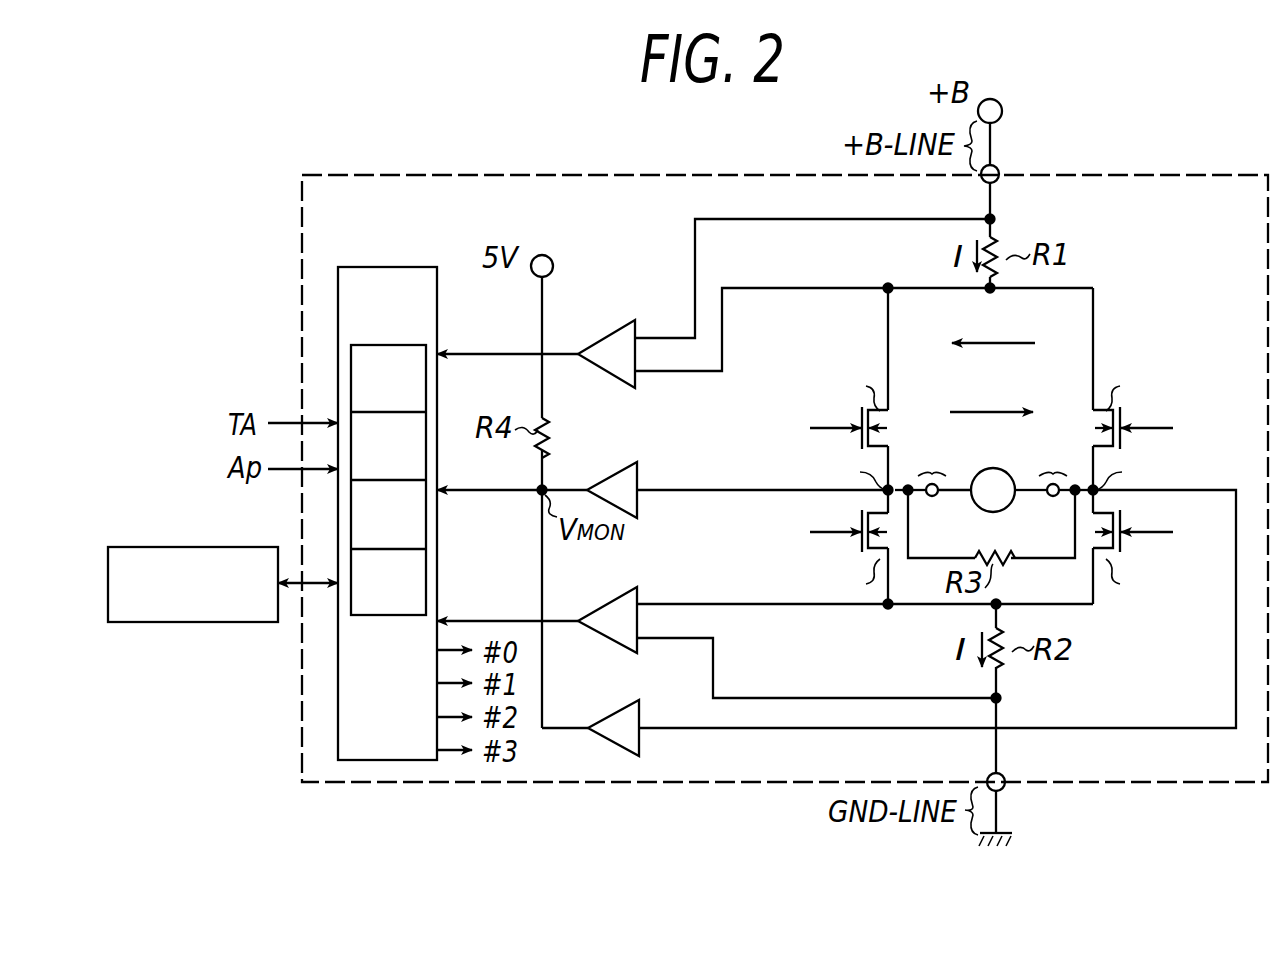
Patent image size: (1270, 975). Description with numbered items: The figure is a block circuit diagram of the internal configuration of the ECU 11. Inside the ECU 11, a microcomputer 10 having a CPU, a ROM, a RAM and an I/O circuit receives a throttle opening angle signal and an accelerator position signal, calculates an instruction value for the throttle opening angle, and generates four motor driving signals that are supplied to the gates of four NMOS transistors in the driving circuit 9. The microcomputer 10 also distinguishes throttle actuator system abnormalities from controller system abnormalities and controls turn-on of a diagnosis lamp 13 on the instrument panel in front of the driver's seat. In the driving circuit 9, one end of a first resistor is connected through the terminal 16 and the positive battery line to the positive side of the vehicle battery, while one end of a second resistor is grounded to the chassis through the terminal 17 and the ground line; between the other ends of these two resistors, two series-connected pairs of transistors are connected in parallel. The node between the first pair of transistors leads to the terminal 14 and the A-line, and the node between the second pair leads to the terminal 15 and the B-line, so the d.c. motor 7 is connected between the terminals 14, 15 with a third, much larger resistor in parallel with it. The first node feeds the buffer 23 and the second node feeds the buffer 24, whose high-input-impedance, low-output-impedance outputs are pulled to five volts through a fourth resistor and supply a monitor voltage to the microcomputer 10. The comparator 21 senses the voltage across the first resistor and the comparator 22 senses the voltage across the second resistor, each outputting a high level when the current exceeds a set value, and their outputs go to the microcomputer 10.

The d.c. motor 7 is at (996, 512).
The driving circuit 9 is at (1114, 272).
The microcomputer 10 is at (388, 267).
The ECU 11 is at (565, 175).
The diagnosis lamp 13 is at (199, 547).
The terminal 14 is at (932, 497).
The terminal 15 is at (1053, 497).
The terminal 16 is at (999, 170).
The terminal 17 is at (1003, 789).
The comparator 21 is at (587, 348).
The comparator 22 is at (595, 607).
The buffer 23 is at (597, 483).
The buffer 24 is at (598, 722).